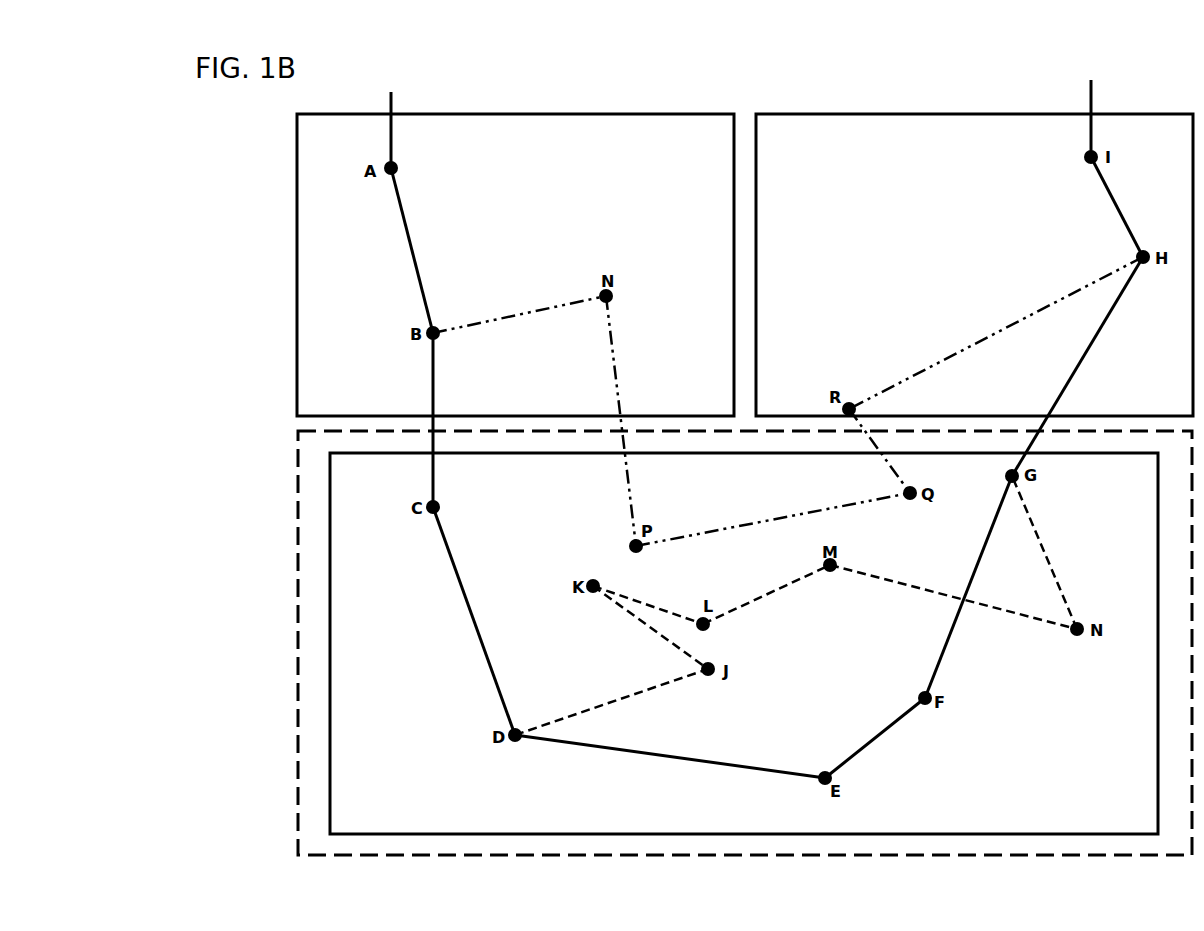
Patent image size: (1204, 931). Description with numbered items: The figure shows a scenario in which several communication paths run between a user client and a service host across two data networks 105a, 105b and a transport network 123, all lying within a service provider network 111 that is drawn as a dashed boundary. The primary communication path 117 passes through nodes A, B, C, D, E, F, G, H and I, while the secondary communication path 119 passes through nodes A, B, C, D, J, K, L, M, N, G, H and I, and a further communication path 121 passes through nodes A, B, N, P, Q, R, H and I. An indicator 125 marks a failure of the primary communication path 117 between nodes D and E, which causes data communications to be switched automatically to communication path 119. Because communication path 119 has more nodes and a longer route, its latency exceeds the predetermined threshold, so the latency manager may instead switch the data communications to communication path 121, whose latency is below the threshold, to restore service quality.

The data network 105a is at (515, 265).
The data network 105b is at (974, 265).
The service provider network 111 is at (298, 622).
The communication path 117 is at (458, 580).
The communication path 119 is at (637, 627).
The communication path 121 is at (627, 476).
The transport network 123 is at (744, 643).
The indicator 125 is at (670, 765).